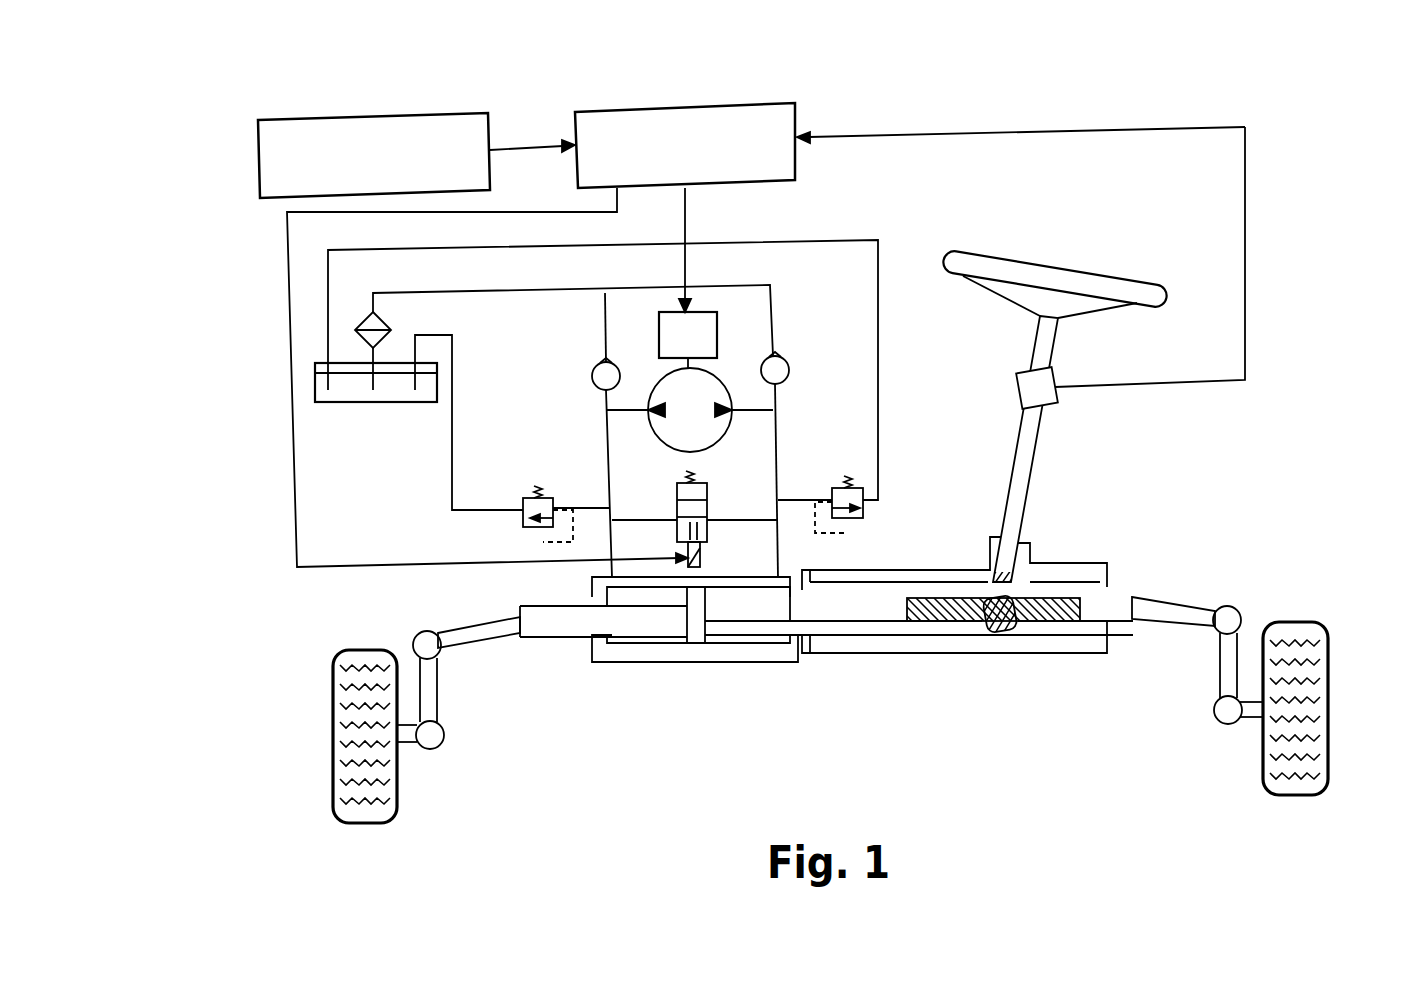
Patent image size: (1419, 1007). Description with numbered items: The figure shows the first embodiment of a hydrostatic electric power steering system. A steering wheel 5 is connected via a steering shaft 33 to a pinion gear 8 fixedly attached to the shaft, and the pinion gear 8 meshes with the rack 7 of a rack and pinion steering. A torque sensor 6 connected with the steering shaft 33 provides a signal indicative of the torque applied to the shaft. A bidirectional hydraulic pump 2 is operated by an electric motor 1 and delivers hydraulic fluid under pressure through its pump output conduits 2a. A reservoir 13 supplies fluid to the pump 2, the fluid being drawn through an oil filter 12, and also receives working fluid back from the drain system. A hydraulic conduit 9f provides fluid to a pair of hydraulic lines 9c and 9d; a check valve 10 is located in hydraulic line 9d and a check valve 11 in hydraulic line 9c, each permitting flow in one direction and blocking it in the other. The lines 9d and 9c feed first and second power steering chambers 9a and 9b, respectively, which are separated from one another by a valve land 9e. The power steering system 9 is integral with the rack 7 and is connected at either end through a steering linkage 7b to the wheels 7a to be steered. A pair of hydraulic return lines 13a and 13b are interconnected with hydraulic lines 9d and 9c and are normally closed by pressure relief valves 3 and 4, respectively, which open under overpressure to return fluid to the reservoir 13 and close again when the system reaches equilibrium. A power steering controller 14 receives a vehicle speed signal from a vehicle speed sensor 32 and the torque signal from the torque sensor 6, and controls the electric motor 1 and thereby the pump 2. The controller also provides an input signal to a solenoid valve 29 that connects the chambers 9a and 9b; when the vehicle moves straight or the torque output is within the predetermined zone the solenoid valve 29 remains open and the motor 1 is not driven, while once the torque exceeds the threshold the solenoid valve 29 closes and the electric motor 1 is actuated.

The electric motor 1 is at (697, 333).
The hydraulic pump 2 is at (668, 427).
The pump output conduits 2a is at (630, 407).
The pressure relief valve 3 is at (527, 532).
The pressure relief valve 4 is at (865, 497).
The steering wheel 5 is at (1088, 269).
The torque sensor 6 is at (1175, 393).
The rack 7 is at (1063, 621).
The wheels 7a is at (1318, 670).
The steering linkage 7b is at (1182, 612).
The pinion gear 8 is at (982, 630).
The power steering system 9 is at (695, 672).
The first power steering chamber 9a is at (625, 643).
The second power steering chamber 9b is at (770, 637).
The hydraulic line 9c is at (780, 554).
The hydraulic line 9d is at (612, 482).
The valve land 9e is at (705, 617).
The hydraulic conduit 9f is at (468, 293).
The check valve 10 is at (600, 364).
The check valve 11 is at (780, 360).
The oil filter 12 is at (367, 307).
The reservoir 13 is at (317, 393).
The hydraulic return line 13a is at (452, 413).
The hydraulic return line 13b is at (845, 232).
The power steering controller 14 is at (685, 145).
The solenoid valve 29 is at (677, 538).
The vehicle speed sensor 32 is at (374, 155).
The steering shaft 33 is at (1025, 510).